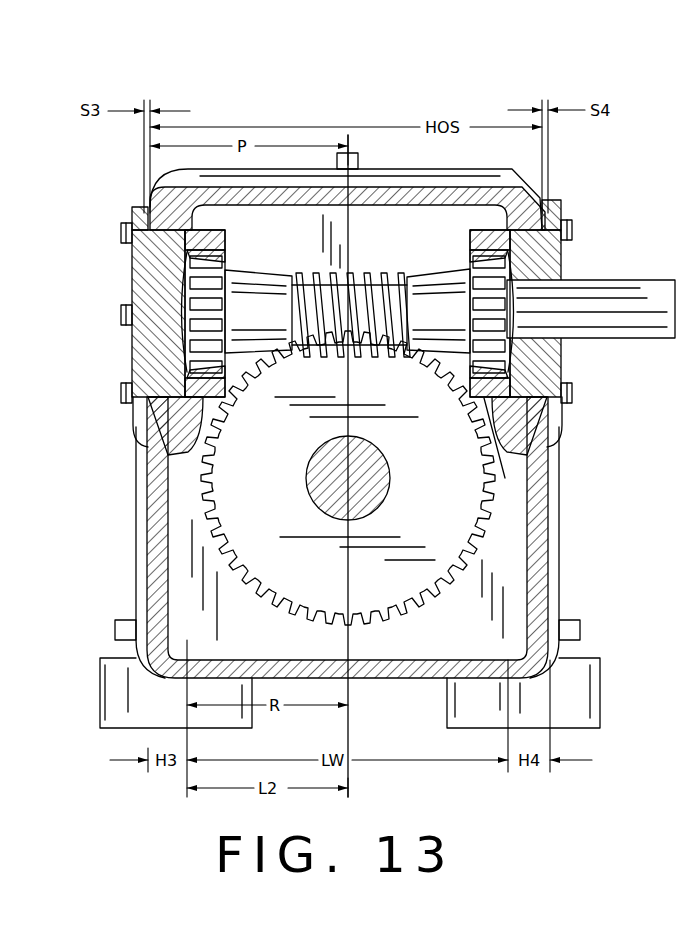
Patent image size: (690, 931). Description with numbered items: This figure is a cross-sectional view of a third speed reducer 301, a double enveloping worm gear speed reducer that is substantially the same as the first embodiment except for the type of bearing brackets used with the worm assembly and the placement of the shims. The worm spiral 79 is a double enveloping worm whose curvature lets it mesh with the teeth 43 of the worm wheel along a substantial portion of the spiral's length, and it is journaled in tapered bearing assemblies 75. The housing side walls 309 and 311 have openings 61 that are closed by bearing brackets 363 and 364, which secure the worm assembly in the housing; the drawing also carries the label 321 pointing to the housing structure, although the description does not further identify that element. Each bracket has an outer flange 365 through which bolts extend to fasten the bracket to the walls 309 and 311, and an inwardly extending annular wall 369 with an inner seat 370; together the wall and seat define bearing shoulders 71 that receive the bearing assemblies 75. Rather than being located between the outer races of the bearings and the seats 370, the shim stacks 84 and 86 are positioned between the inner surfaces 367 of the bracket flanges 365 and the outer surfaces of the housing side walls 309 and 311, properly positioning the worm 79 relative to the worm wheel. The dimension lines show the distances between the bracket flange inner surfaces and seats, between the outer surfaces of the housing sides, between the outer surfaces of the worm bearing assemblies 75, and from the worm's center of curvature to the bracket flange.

The teeth 43 is at (314, 576).
The openings 61 is at (197, 447).
The bearing shoulders 71 is at (213, 228).
The tapered bearing assemblies 75 is at (226, 263).
The worm spiral 79 is at (362, 268).
The shim 84 is at (147, 205).
The shim 86 is at (547, 207).
The speed reducer 301 is at (610, 133).
The wall 309 is at (563, 208).
The wall 311 is at (132, 208).
The housing 321 is at (337, 211).
The bearing bracket 363 is at (578, 257).
The bearing bracket 364 is at (130, 377).
The outer flange 365 is at (133, 415).
The inner surface 367 is at (143, 437).
The annular wall 369 is at (203, 225).
The inner seat 370 is at (190, 450).